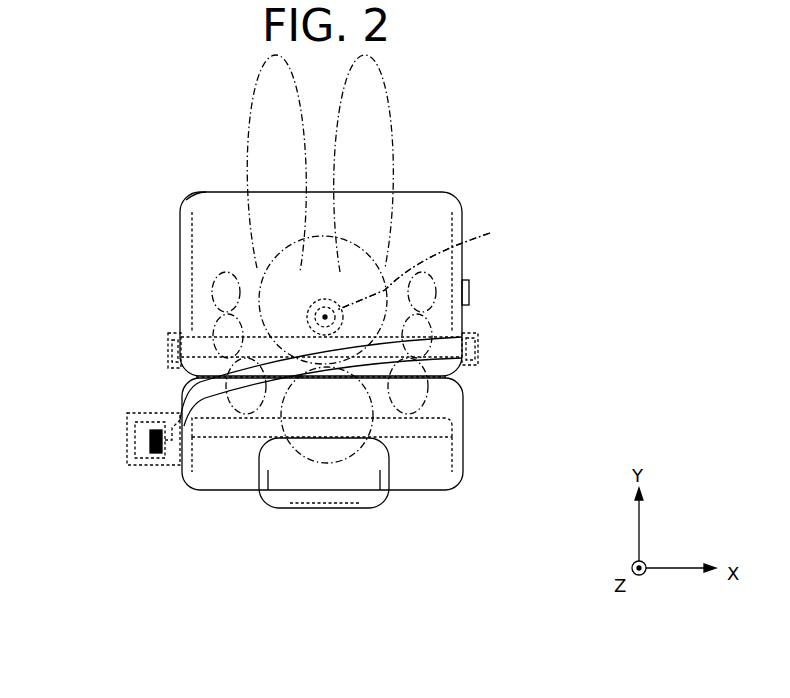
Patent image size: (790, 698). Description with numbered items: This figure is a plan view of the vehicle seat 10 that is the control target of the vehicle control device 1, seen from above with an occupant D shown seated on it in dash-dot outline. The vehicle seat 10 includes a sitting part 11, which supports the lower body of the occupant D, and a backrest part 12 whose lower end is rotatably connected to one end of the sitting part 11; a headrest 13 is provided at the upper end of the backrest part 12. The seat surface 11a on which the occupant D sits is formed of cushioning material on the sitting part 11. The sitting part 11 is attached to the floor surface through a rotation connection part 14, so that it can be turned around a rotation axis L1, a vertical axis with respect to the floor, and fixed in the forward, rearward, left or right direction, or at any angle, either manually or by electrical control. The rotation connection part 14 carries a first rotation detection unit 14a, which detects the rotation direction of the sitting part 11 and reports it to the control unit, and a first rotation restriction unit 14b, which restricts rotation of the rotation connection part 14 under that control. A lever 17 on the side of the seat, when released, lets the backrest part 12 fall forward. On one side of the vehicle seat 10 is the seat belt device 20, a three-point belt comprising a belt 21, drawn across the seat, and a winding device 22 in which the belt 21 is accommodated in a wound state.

The vehicle control device 1 is at (332, 583).
The vehicle seat 10 is at (245, 505).
The sitting part 11 is at (180, 260).
The seat surface 11a is at (203, 202).
The backrest part 12 is at (443, 477).
The headrest 13 is at (365, 497).
The rotation connection part 14 is at (338, 300).
The first rotation detection unit 14a is at (447, 260).
The first rotation restriction unit 14b is at (447, 260).
The lever 17 is at (471, 290).
The seat belt device 20 is at (120, 445).
The belt 21 is at (197, 349).
The winding device 22 is at (140, 458).
The occupant D is at (397, 128).
The rotation axis L1 is at (318, 313).